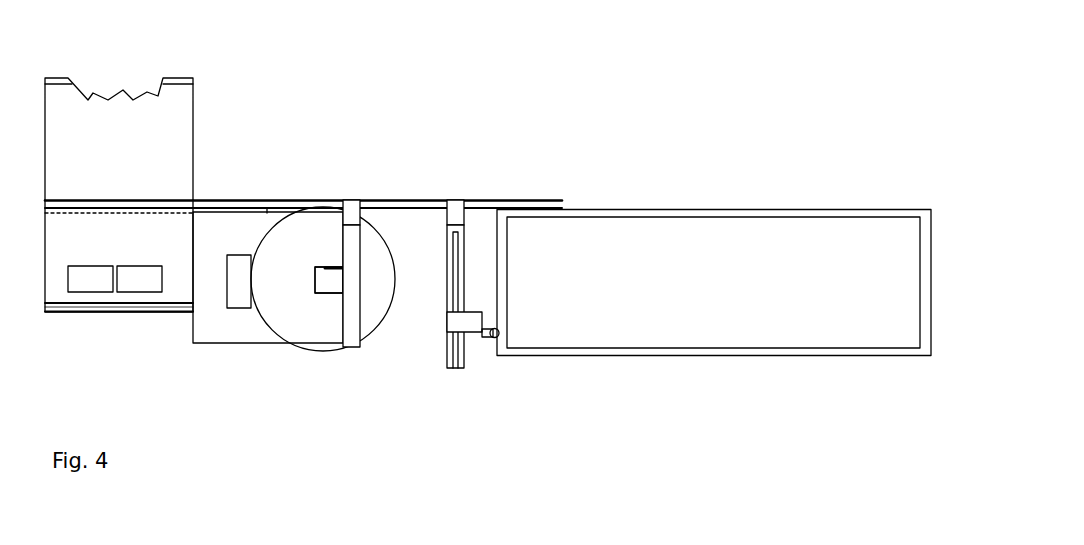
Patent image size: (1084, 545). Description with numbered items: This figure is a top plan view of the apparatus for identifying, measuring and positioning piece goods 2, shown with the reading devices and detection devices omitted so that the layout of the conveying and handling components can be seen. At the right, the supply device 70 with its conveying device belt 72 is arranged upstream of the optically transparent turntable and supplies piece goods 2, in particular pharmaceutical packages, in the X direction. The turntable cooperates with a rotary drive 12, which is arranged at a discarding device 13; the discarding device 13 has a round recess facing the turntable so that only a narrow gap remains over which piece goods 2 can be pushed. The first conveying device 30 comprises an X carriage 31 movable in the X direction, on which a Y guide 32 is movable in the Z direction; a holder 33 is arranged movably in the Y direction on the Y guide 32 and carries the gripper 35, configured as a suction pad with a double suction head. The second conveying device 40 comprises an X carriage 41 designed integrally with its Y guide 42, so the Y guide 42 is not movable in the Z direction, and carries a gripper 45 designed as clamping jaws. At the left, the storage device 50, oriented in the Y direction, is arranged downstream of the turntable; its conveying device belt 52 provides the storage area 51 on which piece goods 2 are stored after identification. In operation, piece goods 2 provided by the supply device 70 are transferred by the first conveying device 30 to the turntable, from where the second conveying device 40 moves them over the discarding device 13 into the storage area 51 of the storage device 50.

The piece goods 2 is at (95, 285).
The rotary drive 12 is at (233, 275).
The discarding device 13 is at (215, 328).
The first conveying device 30 is at (456, 164).
The X carriage 31 is at (455, 212).
The Y guide 32 is at (453, 277).
The holder 33 is at (458, 325).
The gripper 35 is at (488, 339).
The second conveying device 40 is at (351, 164).
The X carriage 41 is at (350, 212).
The Y guide 42 is at (352, 307).
The gripper 45 is at (335, 293).
The storage device 50 is at (228, 114).
The storage area 51 is at (173, 237).
The conveying device belt 52 is at (128, 130).
The supply device 70 is at (719, 166).
The conveying device belt 72 is at (693, 285).